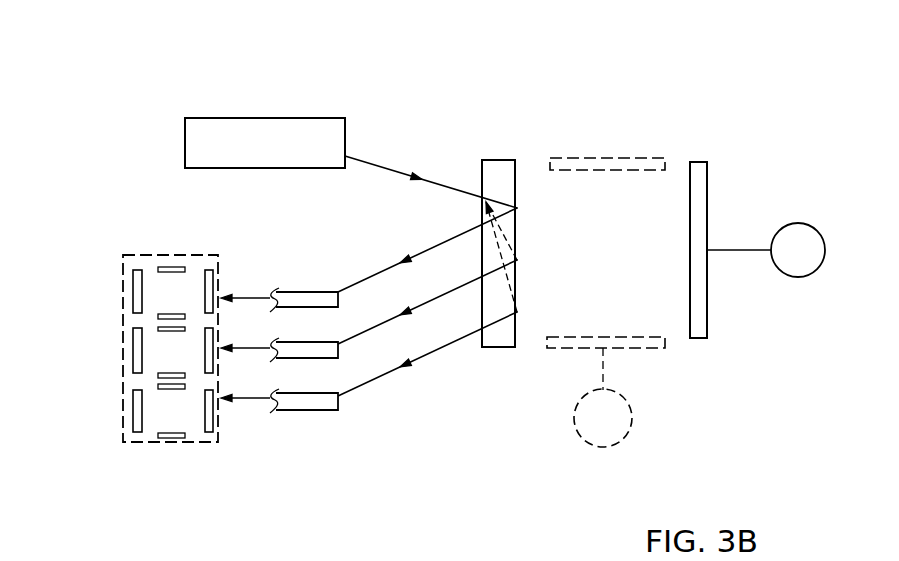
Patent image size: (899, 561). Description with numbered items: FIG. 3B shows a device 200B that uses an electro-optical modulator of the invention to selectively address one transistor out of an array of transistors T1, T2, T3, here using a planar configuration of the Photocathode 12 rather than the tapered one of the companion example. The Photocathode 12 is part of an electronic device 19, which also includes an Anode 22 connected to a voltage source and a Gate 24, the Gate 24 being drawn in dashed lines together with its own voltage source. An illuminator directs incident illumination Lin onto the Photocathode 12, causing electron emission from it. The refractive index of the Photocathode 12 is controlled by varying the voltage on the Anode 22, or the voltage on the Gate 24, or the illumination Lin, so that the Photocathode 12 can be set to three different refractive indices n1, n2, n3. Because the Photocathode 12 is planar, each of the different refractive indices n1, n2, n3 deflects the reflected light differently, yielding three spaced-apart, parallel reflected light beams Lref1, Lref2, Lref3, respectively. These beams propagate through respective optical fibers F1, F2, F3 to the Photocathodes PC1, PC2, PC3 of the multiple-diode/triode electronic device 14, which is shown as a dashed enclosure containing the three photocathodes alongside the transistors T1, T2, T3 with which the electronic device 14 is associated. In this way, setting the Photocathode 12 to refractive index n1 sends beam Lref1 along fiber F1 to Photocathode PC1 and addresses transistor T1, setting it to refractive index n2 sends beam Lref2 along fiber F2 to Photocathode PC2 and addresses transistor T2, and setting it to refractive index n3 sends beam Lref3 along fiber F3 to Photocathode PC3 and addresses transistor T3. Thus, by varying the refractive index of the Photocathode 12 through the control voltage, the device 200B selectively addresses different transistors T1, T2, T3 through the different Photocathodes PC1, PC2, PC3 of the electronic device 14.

The device 200B is at (677, 68).
The Photocathode 12 is at (497, 160).
The electronic device 14 is at (162, 365).
The electronic device 19 is at (757, 290).
The Anode 22 is at (708, 177).
The Gate 24 is at (601, 158).
The transistor T1 is at (121, 272).
The transistor T2 is at (110, 355).
The transistor T3 is at (112, 422).
The Photocathode PC1 is at (210, 270).
The Photocathode PC2 is at (213, 372).
The Photocathode PC3 is at (212, 433).
The optical fiber F1 is at (302, 292).
The optical fiber F2 is at (302, 342).
The optical fiber F3 is at (302, 393).
The refractive index n1 is at (529, 210).
The refractive index n2 is at (529, 263).
The refractive index n3 is at (529, 314).
The illumination Lin is at (378, 166).
The reflected light beam Lref1 is at (432, 248).
The reflected light beam Lref2 is at (459, 287).
The reflected light beam Lref3 is at (399, 367).